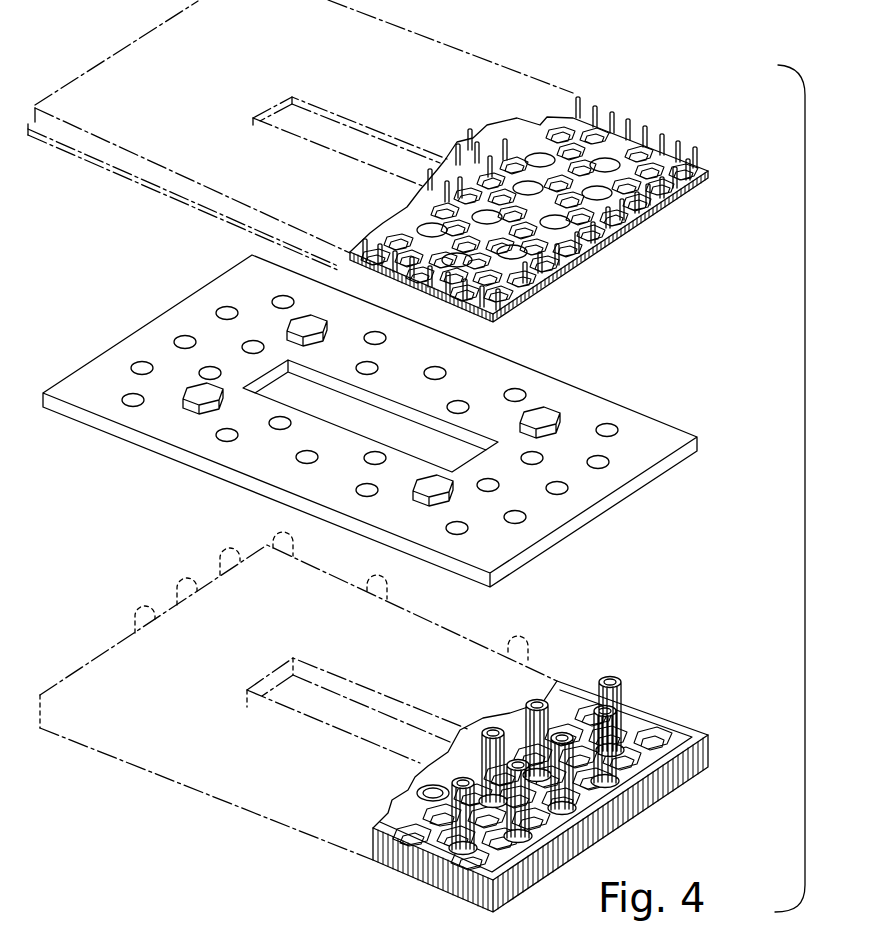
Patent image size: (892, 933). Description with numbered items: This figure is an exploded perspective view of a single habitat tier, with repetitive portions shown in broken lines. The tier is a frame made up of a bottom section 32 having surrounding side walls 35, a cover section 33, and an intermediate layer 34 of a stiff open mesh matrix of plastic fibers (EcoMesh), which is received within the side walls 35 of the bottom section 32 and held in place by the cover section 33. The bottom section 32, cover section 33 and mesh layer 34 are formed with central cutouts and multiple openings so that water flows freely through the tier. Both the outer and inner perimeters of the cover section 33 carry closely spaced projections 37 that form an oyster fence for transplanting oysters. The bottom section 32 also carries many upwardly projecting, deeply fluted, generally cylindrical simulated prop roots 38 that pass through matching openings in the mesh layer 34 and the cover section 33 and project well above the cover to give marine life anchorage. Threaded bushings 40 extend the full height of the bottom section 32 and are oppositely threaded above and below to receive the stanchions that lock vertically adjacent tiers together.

The bottom section 32 is at (715, 725).
The cover section 33 is at (529, 212).
The intermediate layer 34 is at (577, 502).
The side walls 35 is at (540, 768).
The projections 37 is at (630, 120).
The simulated prop roots 38 is at (612, 678).
The threaded bushings 40 is at (433, 807).